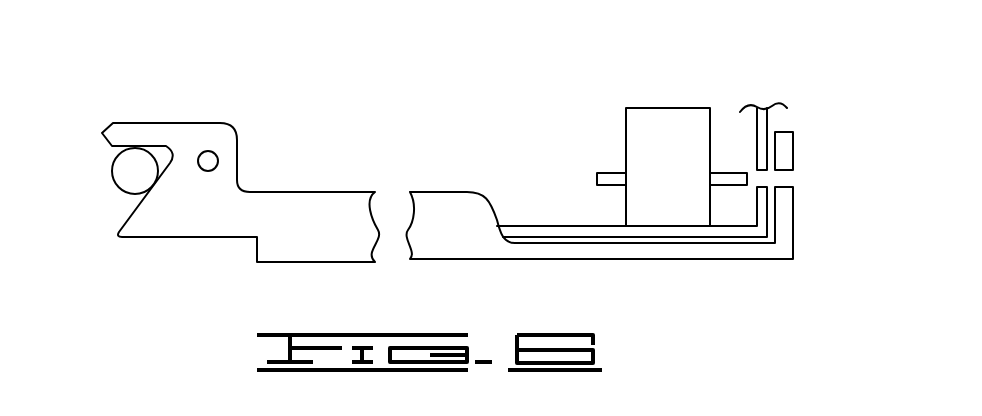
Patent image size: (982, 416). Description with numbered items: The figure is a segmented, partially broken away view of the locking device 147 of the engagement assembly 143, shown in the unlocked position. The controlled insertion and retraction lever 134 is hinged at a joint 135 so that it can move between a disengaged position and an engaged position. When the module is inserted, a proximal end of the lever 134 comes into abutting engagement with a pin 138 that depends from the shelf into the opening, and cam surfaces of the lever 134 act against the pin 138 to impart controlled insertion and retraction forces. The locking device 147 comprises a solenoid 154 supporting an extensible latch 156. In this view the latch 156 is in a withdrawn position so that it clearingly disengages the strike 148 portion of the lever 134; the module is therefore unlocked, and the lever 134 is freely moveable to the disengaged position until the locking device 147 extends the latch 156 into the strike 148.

The lever 134 is at (493, 260).
The joint 135 is at (214, 152).
The pin 138 is at (112, 172).
The engagement assembly 143 is at (654, 83).
The locking device 147 is at (626, 125).
The strike 148 is at (783, 172).
The solenoid 154 is at (640, 160).
The latch 156 is at (728, 170).